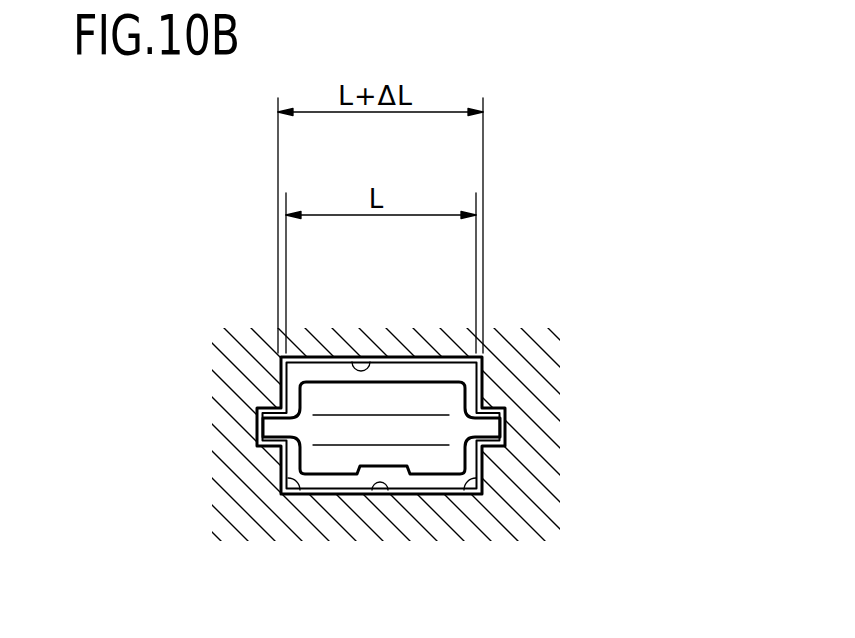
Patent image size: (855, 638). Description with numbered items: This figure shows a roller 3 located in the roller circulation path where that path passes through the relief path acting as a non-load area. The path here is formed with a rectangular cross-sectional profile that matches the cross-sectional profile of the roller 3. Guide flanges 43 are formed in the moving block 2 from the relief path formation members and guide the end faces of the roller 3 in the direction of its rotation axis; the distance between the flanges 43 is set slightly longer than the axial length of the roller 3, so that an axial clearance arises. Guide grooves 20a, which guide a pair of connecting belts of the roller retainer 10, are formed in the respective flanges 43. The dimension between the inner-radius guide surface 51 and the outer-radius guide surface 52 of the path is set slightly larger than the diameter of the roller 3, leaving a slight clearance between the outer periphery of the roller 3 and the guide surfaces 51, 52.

The moving block 2 is at (441, 352).
The roller 3 is at (328, 482).
The roller retainer 10 is at (424, 466).
The guide groove 20a is at (268, 406).
The guide flange 43 is at (297, 493).
The inner-radius guide surface 51 is at (379, 493).
The outer-radius guide surface 52 is at (363, 352).